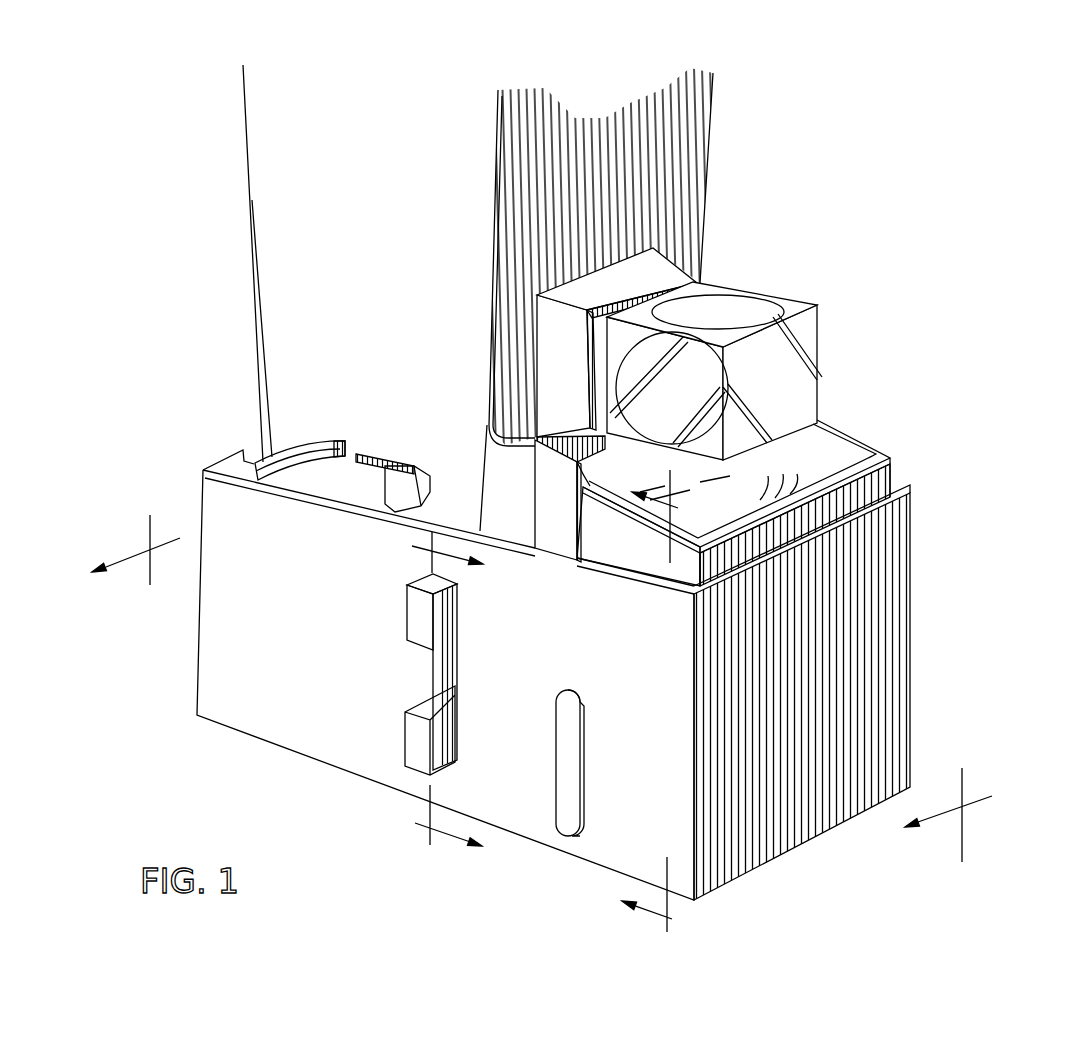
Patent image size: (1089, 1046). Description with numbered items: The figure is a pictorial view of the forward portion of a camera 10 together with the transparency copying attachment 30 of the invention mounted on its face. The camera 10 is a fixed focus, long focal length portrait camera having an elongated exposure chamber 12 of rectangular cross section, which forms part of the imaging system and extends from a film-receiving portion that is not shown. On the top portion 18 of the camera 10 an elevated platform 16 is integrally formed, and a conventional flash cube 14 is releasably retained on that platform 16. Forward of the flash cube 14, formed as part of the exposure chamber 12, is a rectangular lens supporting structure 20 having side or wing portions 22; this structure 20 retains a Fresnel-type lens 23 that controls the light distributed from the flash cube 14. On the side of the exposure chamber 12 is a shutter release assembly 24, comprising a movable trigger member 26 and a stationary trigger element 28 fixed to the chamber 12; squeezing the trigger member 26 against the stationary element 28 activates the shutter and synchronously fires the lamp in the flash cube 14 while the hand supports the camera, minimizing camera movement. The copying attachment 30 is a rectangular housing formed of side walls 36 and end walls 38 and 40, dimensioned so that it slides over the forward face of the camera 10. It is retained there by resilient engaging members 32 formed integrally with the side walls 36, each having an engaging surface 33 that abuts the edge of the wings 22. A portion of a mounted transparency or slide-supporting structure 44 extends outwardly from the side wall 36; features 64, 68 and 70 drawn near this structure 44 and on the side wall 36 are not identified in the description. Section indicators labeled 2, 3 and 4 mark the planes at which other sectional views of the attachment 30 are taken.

The camera 10 is at (128, 385).
The exposure chamber 12 is at (296, 226).
The flash cube 14 is at (810, 325).
The elevated platform 16 is at (655, 272).
The top portion 18 is at (668, 180).
The lens supporting structure 20 is at (884, 432).
The wing portions 22 is at (810, 448).
The Fresnel-type lens 23 is at (808, 478).
The shutter release assembly 24 is at (306, 574).
The trigger member 26 is at (415, 468).
The stationary trigger element 28 is at (314, 456).
The copying attachment 30 is at (930, 679).
The resilient engaging members 32 is at (555, 528).
The engaging surface 33 is at (586, 490).
The side walls 36 is at (222, 662).
The end wall 38 is at (848, 603).
The end wall 40 is at (210, 466).
The slide-supporting structure 44 is at (358, 659).
The slot 64 is at (572, 758).
The lower arm 68 is at (428, 720).
The upper arm 70 is at (458, 648).
The section line 2- 2 is at (546, 688).
The section line 3- 3 is at (660, 701).
The section line 4- 4 is at (437, 687).